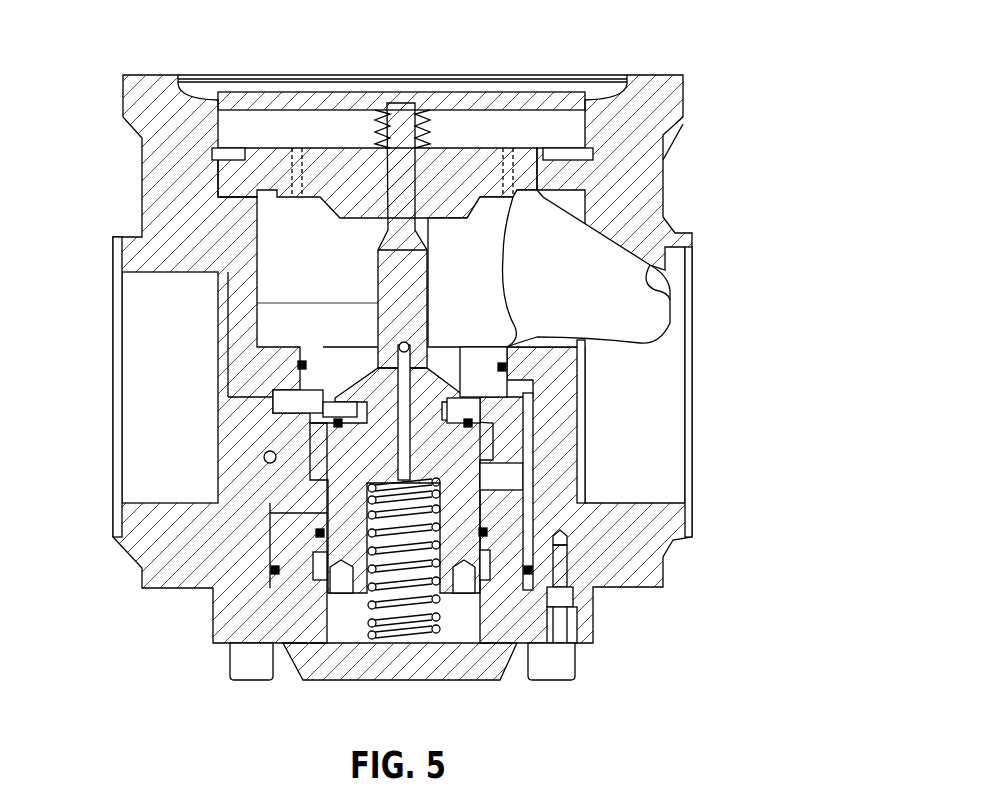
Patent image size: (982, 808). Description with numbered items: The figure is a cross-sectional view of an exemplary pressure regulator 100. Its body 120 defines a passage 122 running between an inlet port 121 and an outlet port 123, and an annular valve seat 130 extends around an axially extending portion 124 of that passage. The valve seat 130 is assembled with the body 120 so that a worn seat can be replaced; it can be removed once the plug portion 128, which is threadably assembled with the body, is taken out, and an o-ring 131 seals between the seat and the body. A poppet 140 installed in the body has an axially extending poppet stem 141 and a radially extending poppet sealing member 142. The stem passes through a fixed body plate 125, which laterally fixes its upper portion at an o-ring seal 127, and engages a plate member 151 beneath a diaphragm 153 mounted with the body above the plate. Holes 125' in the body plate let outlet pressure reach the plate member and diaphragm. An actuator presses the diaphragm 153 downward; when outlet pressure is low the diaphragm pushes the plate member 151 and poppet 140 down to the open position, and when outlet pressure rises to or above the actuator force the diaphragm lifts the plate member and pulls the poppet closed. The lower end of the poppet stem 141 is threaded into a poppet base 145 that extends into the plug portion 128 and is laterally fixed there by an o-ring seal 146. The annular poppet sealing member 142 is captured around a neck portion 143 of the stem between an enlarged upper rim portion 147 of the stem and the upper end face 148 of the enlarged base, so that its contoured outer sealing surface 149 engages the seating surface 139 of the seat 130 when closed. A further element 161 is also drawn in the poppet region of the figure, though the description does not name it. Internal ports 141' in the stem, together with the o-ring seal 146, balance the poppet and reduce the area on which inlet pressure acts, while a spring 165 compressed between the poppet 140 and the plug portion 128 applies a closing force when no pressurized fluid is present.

The pressure regulator 100 is at (768, 86).
The body 120 is at (172, 175).
The inlet port 121 is at (295, 438).
The passage 122 is at (693, 243).
The outlet port 123 is at (662, 290).
The axially extending portion 124 is at (582, 338).
The body plate 125 is at (177, 179).
The holes 125' is at (385, 108).
The o-ring seal 127 is at (387, 210).
The plug portion 128 is at (497, 660).
The valve seat 130 is at (500, 410).
The o-ring 131 is at (298, 357).
The seating surface 139 is at (327, 487).
The poppet 140 is at (600, 267).
The poppet stem 141 is at (527, 244).
The internal ports 141' is at (243, 257).
The poppet sealing member 142 is at (478, 432).
The neck portion 143 is at (465, 465).
The poppet base 145 is at (462, 517).
The o-ring seal 146 is at (530, 568).
The upper rim portion 147 is at (317, 366).
The upper end face 148 is at (318, 450).
The outer sealing surface 149 is at (353, 363).
The plate member 151 is at (467, 78).
The diaphragm 153 is at (375, 78).
The o-ring 161 is at (475, 440).
The spring 165 is at (367, 620).